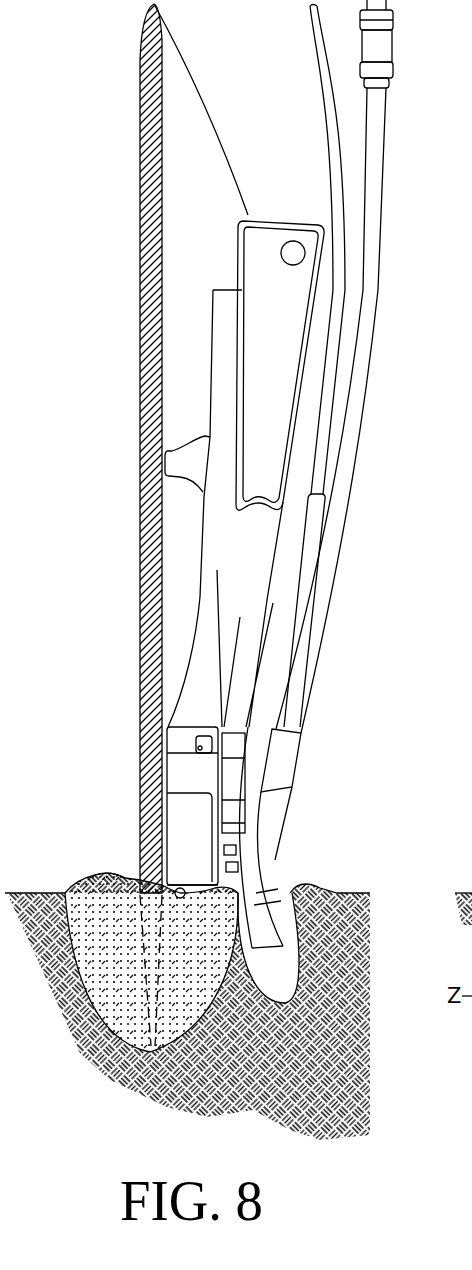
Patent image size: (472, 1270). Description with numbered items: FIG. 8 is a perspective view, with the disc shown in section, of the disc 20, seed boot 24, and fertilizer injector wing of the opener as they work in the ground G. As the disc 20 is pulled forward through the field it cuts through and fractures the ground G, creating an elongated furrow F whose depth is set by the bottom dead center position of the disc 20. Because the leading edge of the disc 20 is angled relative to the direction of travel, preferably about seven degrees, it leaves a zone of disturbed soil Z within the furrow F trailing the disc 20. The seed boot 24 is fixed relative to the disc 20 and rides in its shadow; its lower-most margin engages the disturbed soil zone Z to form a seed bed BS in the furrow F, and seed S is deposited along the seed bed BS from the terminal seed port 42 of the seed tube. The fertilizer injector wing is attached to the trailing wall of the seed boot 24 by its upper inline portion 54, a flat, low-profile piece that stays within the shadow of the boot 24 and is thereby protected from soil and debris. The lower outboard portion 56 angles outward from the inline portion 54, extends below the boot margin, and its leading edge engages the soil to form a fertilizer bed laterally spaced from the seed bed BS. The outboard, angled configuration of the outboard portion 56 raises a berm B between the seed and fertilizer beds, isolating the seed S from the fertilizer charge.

The disc 20 is at (183, 163).
The seed boot 24 is at (263, 593).
The terminal seed port 42 is at (194, 806).
The upper inline portion 54 is at (235, 787).
The lower outboard portion 56 is at (275, 910).
The seed bed BS is at (185, 880).
The seed S is at (176, 893).
The furrow F is at (107, 862).
The zone of disturbed soil Z is at (95, 876).
The ground G is at (337, 893).
The berm B is at (250, 975).